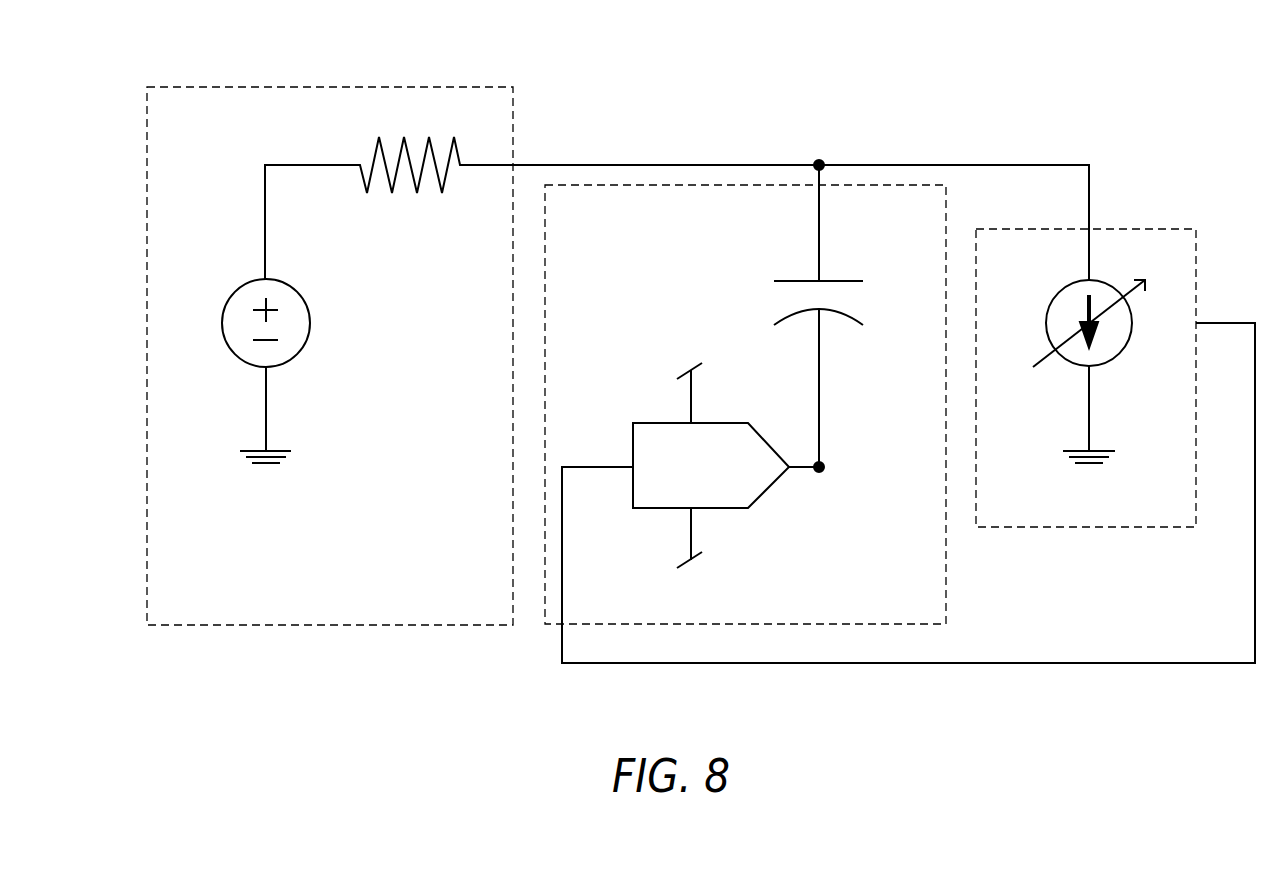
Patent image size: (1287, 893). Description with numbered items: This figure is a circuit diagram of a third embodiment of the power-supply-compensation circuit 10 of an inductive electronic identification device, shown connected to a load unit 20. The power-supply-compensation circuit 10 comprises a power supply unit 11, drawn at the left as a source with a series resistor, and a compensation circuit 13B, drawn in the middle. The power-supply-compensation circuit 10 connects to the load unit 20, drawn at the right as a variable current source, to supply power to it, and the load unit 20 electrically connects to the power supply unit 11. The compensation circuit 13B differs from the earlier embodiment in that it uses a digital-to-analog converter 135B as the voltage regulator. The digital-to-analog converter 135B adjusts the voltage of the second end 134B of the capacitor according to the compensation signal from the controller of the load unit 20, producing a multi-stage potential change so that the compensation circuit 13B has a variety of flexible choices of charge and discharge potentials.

The power supply unit 11 is at (229, 80).
The power-supply-compensation circuit 10 is at (628, 158).
The compensation circuit 13B is at (900, 453).
The digital-to-analog converter 135B is at (656, 420).
The second end of the capacitor 134B is at (819, 474).
The load unit 20 is at (1155, 216).